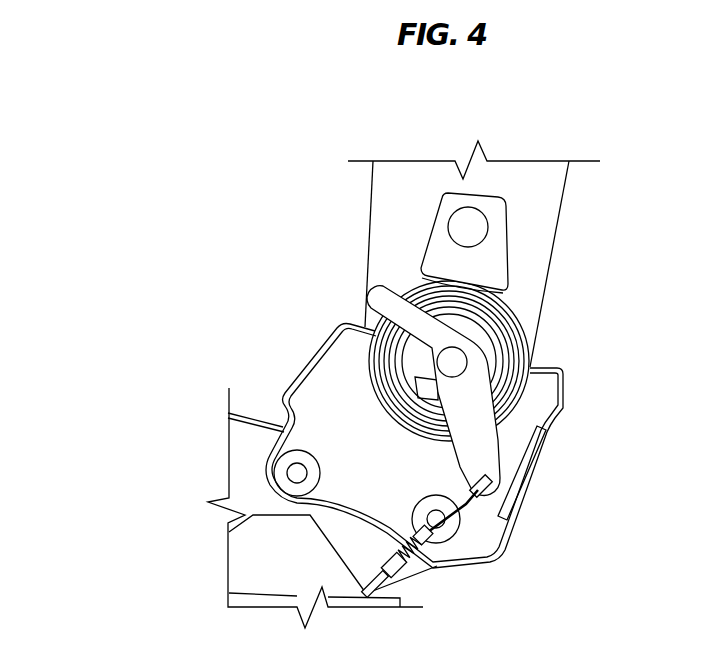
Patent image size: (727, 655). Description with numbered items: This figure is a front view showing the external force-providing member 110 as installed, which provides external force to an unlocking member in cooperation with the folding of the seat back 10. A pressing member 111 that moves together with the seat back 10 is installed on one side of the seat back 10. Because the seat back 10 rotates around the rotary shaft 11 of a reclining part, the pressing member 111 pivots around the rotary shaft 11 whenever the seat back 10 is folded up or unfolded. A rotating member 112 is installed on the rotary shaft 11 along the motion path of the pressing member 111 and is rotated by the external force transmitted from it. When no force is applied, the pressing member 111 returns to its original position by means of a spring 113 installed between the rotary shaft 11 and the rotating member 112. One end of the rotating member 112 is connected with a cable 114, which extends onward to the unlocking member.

The seat back 10 is at (535, 183).
The external force-providing member 110 is at (190, 307).
The rotary shaft 11 is at (448, 361).
The pressing member 111 is at (497, 248).
The rotating member 112 is at (475, 445).
The spring 113 is at (528, 335).
The cable 114 is at (448, 521).